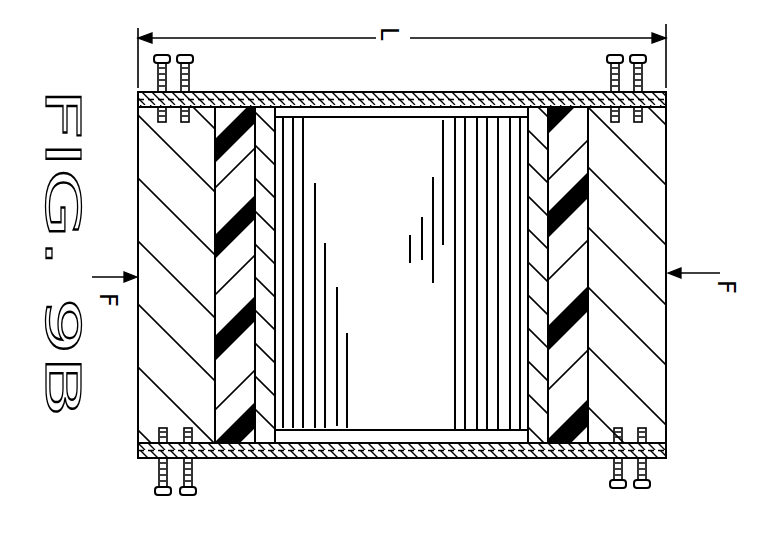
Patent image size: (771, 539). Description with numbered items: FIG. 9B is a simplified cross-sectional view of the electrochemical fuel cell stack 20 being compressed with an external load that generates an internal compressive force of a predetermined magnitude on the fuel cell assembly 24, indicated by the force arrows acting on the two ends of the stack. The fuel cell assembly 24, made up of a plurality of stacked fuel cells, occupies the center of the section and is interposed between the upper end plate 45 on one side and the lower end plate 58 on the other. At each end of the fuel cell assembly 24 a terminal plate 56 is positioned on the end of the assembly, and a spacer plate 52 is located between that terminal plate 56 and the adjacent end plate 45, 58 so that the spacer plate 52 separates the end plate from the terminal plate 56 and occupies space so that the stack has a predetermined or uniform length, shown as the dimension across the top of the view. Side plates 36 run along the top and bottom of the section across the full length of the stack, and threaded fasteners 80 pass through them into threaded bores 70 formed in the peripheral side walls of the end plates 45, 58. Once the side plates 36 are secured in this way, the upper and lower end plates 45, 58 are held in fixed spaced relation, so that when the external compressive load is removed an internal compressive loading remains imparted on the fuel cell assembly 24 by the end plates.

The fuel cell stack 20 is at (700, 373).
The fuel cell assembly 24 is at (385, 365).
The side plate 36 is at (326, 90).
The upper end plate 45 is at (658, 143).
The spacer plate 52 is at (227, 198).
The terminal plate 56 is at (270, 140).
The lower end plate 58 is at (152, 157).
The threaded bore 70 is at (638, 428).
The threaded fastener 80 is at (648, 466).